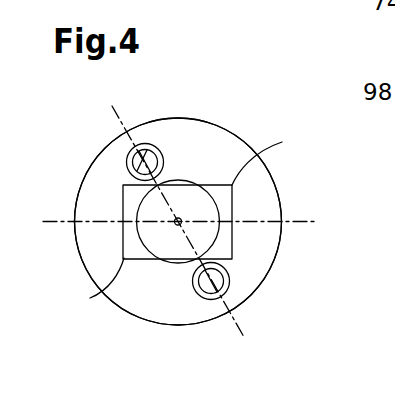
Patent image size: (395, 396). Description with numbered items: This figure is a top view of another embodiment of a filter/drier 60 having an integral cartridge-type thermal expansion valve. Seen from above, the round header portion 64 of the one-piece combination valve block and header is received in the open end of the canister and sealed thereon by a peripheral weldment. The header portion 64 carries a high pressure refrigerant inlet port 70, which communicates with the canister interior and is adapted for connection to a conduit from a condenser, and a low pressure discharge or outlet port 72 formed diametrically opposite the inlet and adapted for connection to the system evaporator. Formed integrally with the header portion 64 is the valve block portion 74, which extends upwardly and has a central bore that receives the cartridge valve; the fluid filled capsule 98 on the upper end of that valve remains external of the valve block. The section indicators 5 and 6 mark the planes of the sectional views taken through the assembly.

The filter/drier embodiment 60 is at (212, 97).
The header portion 64 is at (270, 266).
The high pressure refrigerant inlet port 70 is at (177, 276).
The low pressure discharge port 72 is at (139, 146).
The valve block portion 74 is at (271, 151).
The fluid filled capsule 98 is at (92, 284).
The section line 5- 5 is at (112, 106).
The section line 6- 6 is at (43, 222).